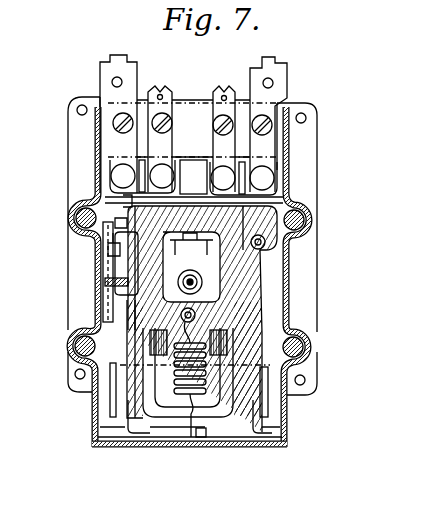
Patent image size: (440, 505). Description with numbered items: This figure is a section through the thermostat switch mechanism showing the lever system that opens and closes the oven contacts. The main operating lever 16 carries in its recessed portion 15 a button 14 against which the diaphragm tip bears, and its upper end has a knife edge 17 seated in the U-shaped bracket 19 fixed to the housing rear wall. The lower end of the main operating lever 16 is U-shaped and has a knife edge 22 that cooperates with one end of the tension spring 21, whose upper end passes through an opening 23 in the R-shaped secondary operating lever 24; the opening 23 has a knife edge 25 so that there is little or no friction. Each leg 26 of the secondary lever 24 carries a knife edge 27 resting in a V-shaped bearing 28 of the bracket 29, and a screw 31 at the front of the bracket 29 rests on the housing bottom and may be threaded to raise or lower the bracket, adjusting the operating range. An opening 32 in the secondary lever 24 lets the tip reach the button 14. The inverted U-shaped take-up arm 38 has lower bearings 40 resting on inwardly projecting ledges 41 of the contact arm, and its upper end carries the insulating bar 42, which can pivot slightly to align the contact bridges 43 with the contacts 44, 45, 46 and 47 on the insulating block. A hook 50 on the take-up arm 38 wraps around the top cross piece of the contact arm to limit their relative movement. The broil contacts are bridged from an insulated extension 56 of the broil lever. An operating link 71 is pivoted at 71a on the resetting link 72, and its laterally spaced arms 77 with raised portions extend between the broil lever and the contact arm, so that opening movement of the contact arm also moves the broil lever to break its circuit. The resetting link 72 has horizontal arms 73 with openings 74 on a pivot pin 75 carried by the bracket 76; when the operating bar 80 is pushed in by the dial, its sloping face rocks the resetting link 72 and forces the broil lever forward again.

The button 14 is at (200, 283).
The recessed portion 15 is at (252, 270).
The main operating lever 16 is at (265, 308).
The knife edge 17 is at (215, 255).
The U-shaped bracket 19 is at (251, 243).
The tension spring 21 is at (290, 372).
The knife edge 22 is at (206, 425).
The opening 23 is at (214, 296).
The secondary operating lever 24 is at (138, 260).
The knife edge 25 is at (181, 314).
The leg 26 is at (250, 380).
The knife edge 27 is at (127, 435).
The V-shaped bearing 28 is at (110, 423).
The bracket 29 is at (167, 430).
The screw 31 is at (195, 448).
The opening 32 is at (128, 308).
The take-up arm 38 is at (262, 262).
The bearing 40 is at (268, 335).
The ledge 41 is at (262, 356).
The insulating bar 42 is at (191, 165).
The contact bridge 43 is at (100, 188).
The contact 44 is at (118, 142).
The contact 45 is at (173, 131).
The contact 46 is at (173, 141).
The contact 47 is at (266, 147).
The hook 50 is at (192, 233).
The insulated extension 56 is at (300, 205).
The operating link 71 is at (100, 236).
The pivot 71a is at (105, 250).
The resetting link 72 is at (100, 297).
The arm 73 is at (88, 325).
The opening 74 is at (105, 336).
The pivot pin 75 is at (70, 345).
The bracket 76 is at (103, 281).
The arm 77 is at (128, 215).
The operating bar 80 is at (100, 273).